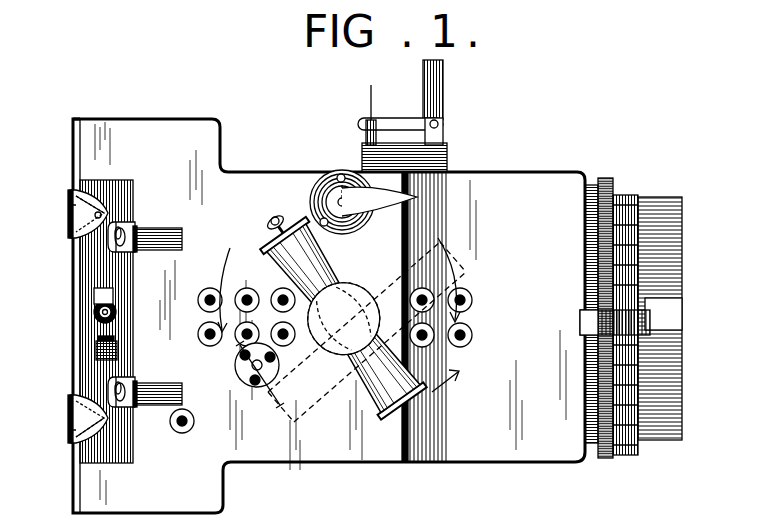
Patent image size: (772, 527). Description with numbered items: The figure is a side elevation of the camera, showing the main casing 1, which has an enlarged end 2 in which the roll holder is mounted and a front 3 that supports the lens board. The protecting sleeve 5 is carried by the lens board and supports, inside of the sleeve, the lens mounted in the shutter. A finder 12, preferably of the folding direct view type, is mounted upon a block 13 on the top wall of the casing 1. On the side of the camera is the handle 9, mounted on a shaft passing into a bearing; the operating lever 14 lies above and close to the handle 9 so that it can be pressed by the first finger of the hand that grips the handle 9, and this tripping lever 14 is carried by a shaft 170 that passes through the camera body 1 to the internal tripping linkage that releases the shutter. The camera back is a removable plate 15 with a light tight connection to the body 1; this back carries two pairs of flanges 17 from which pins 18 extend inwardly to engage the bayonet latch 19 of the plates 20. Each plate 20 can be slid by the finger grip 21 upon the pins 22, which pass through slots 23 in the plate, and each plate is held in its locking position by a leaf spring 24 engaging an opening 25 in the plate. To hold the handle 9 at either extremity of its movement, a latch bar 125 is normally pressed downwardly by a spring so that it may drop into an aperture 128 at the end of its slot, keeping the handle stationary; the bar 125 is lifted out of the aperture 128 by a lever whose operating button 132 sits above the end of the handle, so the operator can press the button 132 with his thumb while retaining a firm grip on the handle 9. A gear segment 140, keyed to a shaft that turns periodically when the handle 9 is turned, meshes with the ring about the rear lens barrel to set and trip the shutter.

The main casing 1 is at (272, 172).
The enlarged end 2 is at (152, 130).
The front 3 is at (590, 173).
The protecting sleeve 5 is at (660, 278).
The handle 9 is at (392, 410).
The finder 12 is at (443, 95).
The block 13 is at (447, 146).
The operating lever 14 is at (417, 197).
The removable plate 15 is at (79, 132).
The flanges 17 is at (78, 197).
The pins 18 is at (72, 204).
The bayonet latch 19 is at (103, 195).
The plates 20 is at (92, 268).
The finger grip 21 is at (94, 310).
The pins 22 is at (110, 245).
The slots 23 is at (116, 232).
The leaf spring 24 is at (98, 350).
The opening 25 is at (94, 330).
The latch bar 125 is at (270, 218).
The aperture 128 is at (364, 268).
The operating button 132 is at (245, 398).
The gear segment 140 is at (586, 356).
The shaft 170 is at (346, 178).